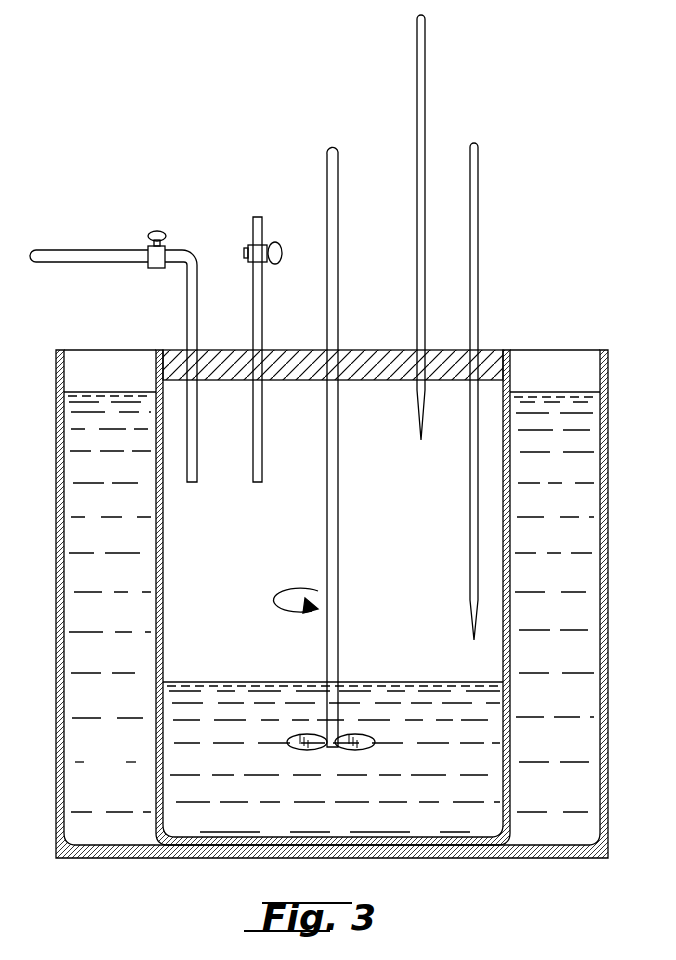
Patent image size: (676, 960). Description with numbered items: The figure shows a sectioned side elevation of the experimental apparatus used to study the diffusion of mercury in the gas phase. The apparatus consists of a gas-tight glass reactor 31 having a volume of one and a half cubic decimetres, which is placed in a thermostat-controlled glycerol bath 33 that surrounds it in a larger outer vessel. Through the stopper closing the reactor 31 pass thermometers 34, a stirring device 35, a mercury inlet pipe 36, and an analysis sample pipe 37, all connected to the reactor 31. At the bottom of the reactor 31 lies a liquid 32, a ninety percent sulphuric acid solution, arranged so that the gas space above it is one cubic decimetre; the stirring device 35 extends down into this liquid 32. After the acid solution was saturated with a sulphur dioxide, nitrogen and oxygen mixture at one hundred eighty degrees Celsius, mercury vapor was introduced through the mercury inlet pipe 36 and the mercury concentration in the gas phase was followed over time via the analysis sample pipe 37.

The glass reactor 31 is at (163, 585).
The inner liquid (reaction mixture) 32 is at (241, 776).
The thermostat-controlled glycerol bath 33 is at (115, 776).
The thermometers 34 is at (470, 248).
The stirring device 35 is at (336, 175).
The mercury inlet pipe 36 is at (96, 250).
The analysis sample pipe 37 is at (262, 232).